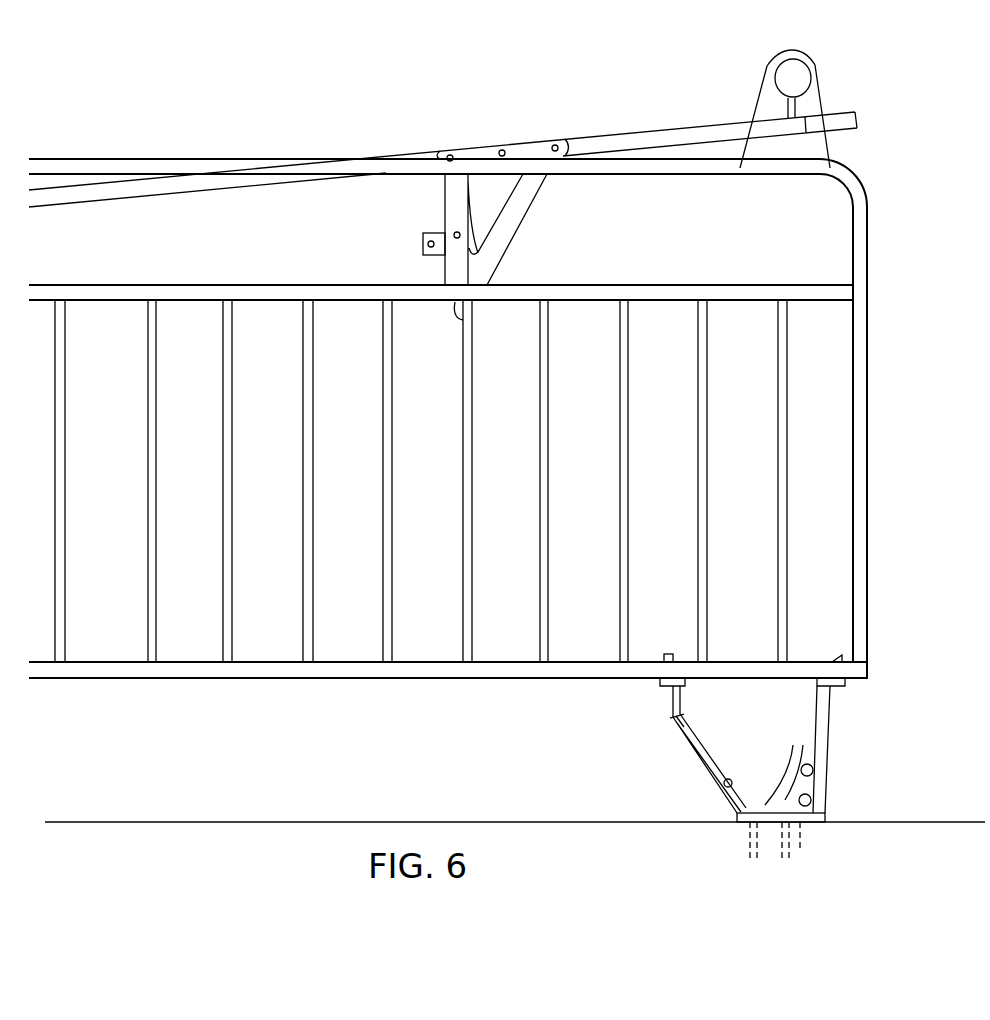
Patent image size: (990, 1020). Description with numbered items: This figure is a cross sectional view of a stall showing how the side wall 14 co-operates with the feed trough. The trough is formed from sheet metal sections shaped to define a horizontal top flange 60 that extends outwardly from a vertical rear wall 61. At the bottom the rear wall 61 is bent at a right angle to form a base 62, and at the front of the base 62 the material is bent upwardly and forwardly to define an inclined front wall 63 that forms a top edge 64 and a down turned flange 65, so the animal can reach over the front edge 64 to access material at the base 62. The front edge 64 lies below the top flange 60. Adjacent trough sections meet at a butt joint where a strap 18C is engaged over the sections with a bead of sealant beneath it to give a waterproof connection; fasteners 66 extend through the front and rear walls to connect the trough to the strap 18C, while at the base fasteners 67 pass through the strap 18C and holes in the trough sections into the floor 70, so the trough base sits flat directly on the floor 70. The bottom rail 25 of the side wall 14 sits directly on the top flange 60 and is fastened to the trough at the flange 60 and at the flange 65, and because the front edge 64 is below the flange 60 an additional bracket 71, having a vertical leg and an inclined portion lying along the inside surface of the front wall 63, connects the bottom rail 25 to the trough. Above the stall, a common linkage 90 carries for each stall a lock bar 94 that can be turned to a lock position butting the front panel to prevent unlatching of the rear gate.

The side wall 14 is at (877, 437).
The bottom rail 25 is at (725, 665).
The top flange 60 is at (840, 672).
The rear wall 61 is at (838, 735).
The base 62 is at (786, 852).
The front wall 63 is at (713, 765).
The top edge 64 is at (670, 720).
The down turned flange 65 is at (670, 740).
The fasteners 66 is at (730, 781).
The fasteners 67 is at (788, 756).
The floor 70 is at (640, 825).
The bracket 71 is at (682, 700).
The strap 18C is at (808, 822).
The common linkage 90 is at (840, 75).
The lock bar 94 is at (798, 108).